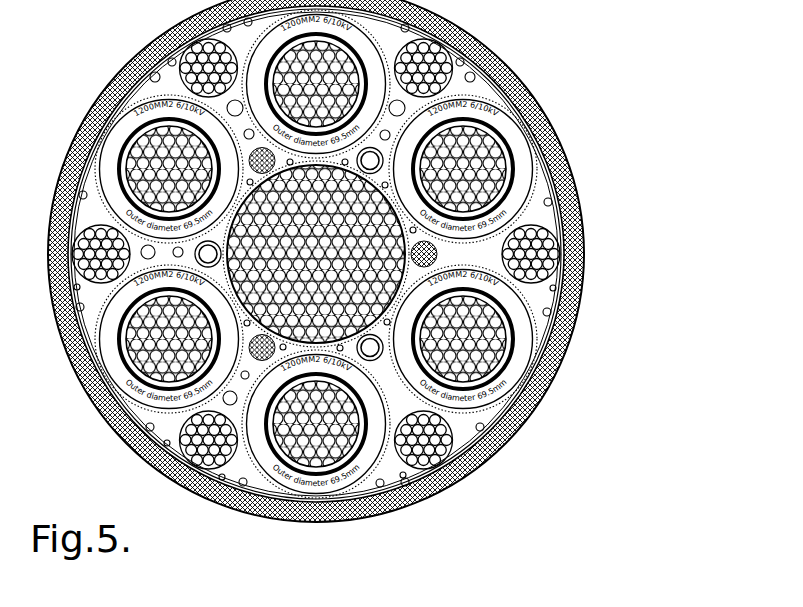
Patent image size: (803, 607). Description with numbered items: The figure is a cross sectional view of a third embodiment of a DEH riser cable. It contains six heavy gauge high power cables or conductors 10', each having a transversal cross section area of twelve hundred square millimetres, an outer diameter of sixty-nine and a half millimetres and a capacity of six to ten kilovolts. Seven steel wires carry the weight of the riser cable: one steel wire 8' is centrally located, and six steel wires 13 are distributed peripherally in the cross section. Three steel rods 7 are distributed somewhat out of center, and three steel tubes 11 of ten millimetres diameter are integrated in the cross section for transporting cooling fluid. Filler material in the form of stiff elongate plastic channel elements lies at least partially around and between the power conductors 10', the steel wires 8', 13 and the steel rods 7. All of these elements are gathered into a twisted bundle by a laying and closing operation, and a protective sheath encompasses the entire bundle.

The steel wire 13 is at (503, 68).
The steel wire 8' is at (485, 254).
The high power cable 10' is at (572, 169).
The steel rod 7 is at (503, 256).
The steel tube 11 is at (372, 163).